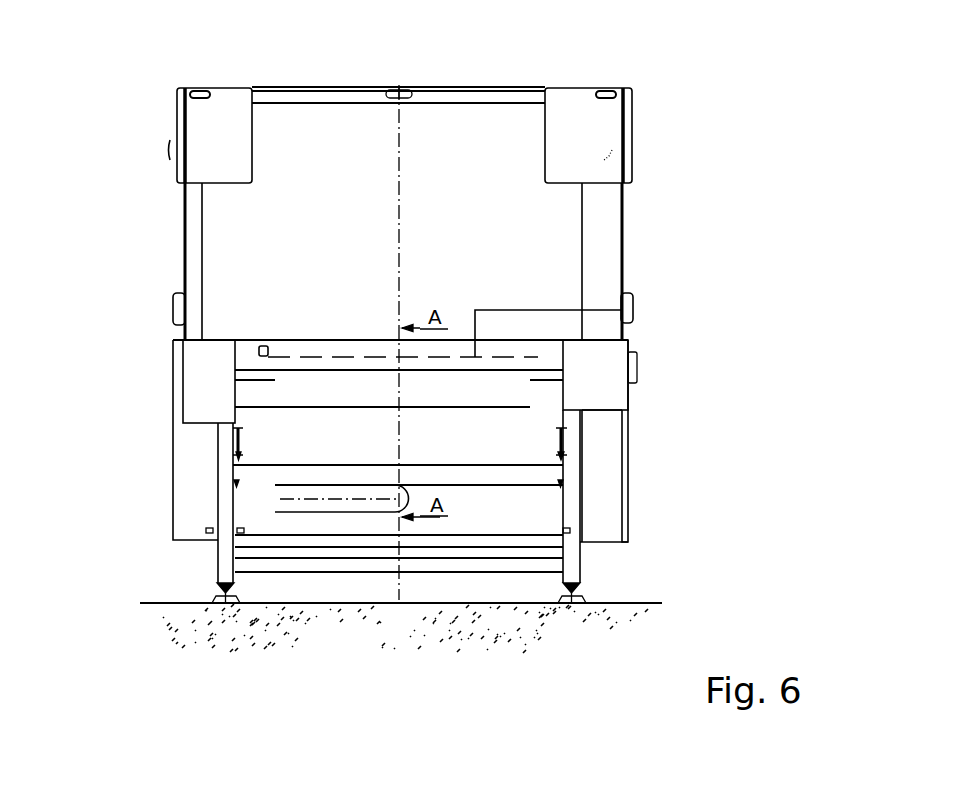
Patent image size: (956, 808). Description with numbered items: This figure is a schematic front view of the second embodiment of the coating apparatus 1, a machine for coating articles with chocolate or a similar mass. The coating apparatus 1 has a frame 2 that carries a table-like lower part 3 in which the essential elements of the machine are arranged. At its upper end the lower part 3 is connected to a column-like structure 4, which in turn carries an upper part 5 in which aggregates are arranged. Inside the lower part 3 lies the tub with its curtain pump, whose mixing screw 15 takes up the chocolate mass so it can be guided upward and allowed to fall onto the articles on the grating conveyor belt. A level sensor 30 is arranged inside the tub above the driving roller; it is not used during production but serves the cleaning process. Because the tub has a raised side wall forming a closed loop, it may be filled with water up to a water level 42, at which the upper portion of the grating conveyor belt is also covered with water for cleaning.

The coating apparatus 1 is at (647, 66).
The frame 2 is at (567, 392).
The lower part 3 is at (650, 421).
The column-like structure 4 is at (187, 212).
The upper part 5 is at (200, 130).
The mixing screw 15 is at (278, 380).
The level sensor 30 is at (262, 346).
The water level 42 is at (627, 312).